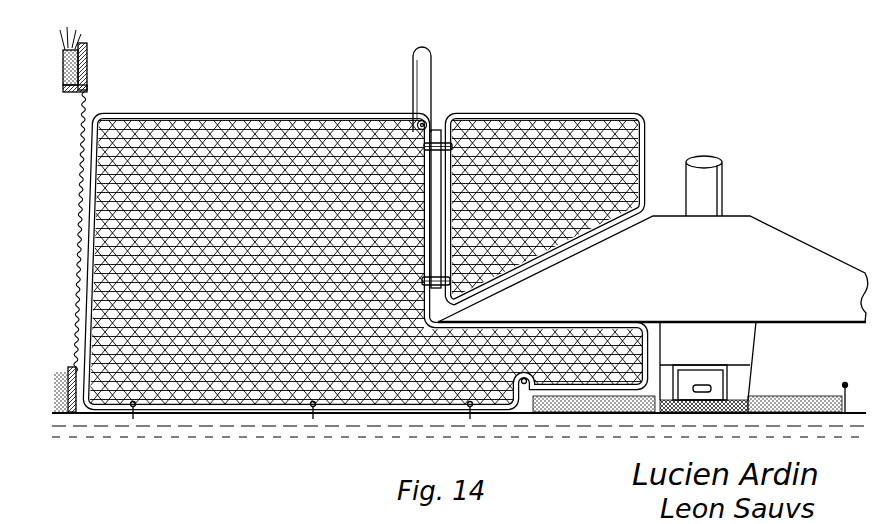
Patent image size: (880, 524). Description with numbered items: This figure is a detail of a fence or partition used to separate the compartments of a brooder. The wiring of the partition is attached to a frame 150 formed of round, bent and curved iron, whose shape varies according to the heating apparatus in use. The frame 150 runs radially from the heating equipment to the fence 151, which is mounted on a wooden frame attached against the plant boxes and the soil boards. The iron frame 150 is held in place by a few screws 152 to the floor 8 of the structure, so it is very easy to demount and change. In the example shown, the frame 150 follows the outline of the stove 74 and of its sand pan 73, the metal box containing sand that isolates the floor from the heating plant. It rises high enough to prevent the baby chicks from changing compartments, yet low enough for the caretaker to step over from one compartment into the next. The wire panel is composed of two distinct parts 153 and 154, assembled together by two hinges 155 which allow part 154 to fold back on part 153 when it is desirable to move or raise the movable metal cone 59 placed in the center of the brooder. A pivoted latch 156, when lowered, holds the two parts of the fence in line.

The frame 150 is at (141, 114).
The fence 151 is at (87, 109).
The screws 152 is at (134, 418).
The first part of wire panel 153 is at (240, 168).
The second part of wire panel 154 is at (518, 170).
The hinges 155 is at (448, 122).
The pivoted latch 156 is at (431, 101).
The movable metal cone 59 is at (653, 278).
The stove 74 is at (705, 371).
The metal box 73 is at (690, 397).
The floor 8 is at (459, 435).